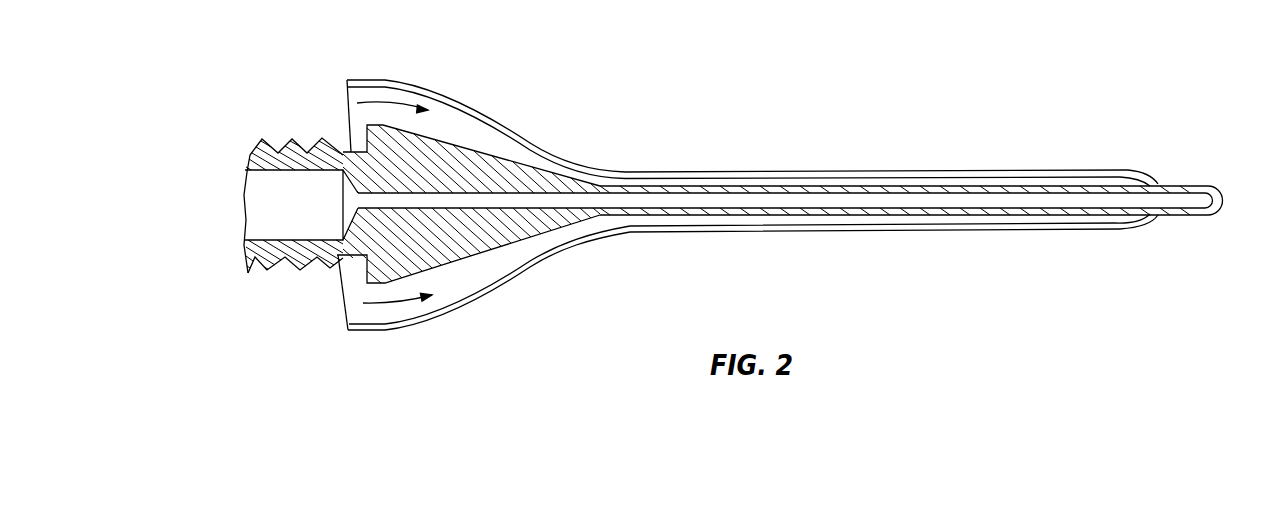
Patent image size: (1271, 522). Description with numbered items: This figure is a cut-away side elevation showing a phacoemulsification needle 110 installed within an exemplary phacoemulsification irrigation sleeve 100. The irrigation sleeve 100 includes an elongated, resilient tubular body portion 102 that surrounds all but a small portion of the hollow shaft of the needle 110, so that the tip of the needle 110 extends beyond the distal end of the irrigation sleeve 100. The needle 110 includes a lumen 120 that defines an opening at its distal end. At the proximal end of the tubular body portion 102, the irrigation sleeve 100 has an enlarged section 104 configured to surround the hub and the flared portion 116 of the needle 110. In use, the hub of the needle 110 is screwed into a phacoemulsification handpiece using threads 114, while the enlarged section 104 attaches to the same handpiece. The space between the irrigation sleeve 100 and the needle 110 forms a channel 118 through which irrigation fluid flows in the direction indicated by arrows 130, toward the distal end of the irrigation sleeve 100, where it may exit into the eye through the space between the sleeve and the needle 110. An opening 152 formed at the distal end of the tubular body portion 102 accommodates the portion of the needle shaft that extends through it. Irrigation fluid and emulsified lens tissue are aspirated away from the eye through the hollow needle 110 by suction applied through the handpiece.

The phacoemulsification irrigation sleeve 100 is at (640, 145).
The tubular body portion 102 is at (784, 171).
The enlarged section 104 is at (388, 80).
The phacoemulsification needle 110 is at (978, 190).
The threads 114 is at (317, 132).
The flared portion 116 is at (437, 147).
The channel 118 is at (1003, 218).
The lumen 120 is at (1077, 198).
The arrows 130 is at (377, 105).
The opening 152 is at (1220, 257).